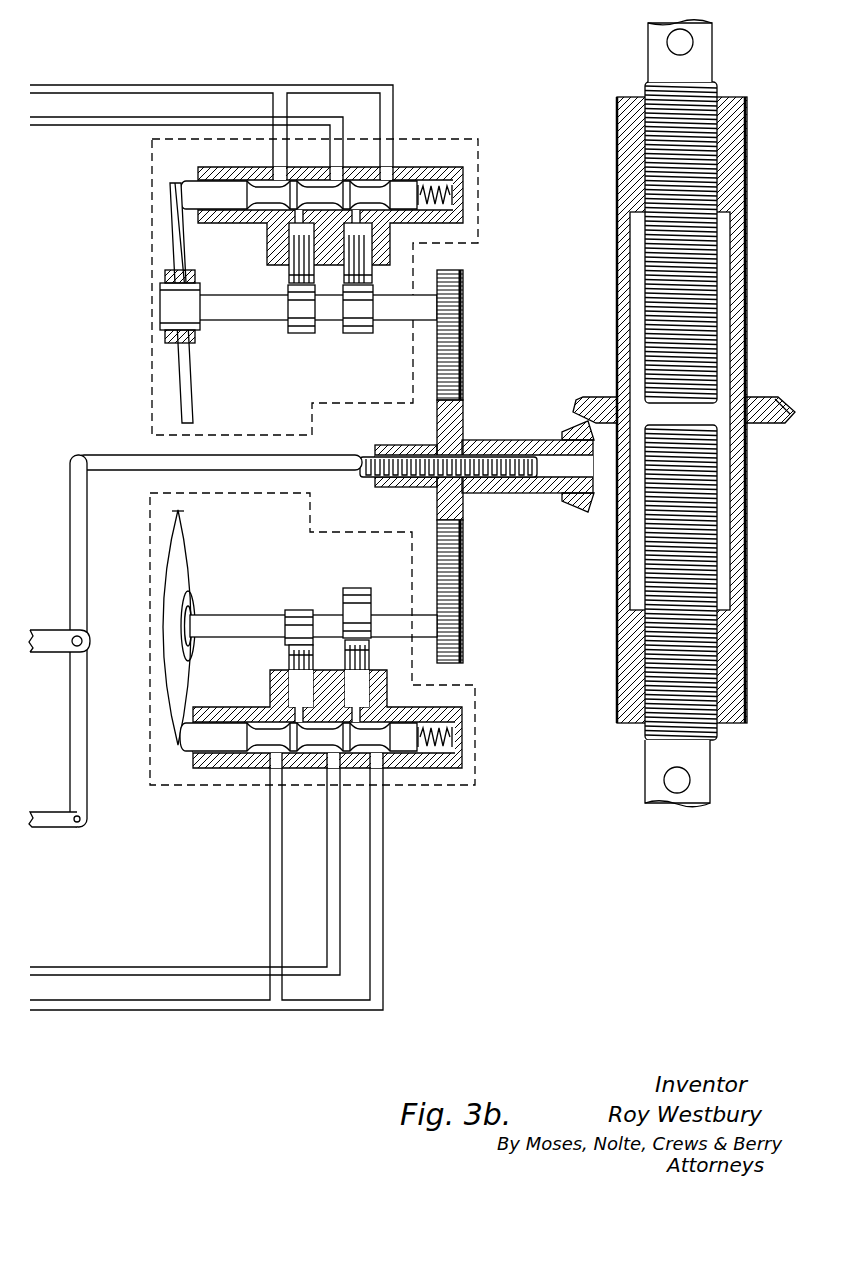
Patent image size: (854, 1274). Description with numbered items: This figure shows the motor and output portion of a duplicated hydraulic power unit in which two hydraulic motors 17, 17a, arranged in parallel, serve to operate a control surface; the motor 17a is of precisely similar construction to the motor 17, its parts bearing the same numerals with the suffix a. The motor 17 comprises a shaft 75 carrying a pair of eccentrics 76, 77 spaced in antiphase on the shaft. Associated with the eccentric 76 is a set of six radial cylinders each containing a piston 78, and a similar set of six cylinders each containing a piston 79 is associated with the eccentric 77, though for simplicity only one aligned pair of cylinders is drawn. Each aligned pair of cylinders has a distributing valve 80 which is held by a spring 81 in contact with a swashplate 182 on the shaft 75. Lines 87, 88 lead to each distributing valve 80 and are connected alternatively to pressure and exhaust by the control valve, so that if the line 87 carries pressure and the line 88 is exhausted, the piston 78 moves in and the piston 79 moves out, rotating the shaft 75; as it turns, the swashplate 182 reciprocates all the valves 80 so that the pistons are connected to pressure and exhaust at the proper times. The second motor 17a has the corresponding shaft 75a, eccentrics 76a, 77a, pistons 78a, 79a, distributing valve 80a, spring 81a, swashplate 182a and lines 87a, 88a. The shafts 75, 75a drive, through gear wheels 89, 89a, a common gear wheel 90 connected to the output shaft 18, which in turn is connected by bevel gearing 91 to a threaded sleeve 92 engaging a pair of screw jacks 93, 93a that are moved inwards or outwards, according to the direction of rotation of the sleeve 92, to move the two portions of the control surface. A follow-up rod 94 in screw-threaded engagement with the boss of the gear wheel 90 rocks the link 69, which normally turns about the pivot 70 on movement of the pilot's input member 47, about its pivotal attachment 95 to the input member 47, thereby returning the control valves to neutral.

The hydraulic motor 17 is at (468, 134).
The hydraulic motor 17a is at (459, 798).
The output shaft 18 is at (479, 440).
The pilot's input member 47 is at (52, 856).
The link 69 is at (88, 697).
The pivot 70 is at (74, 458).
The shaft 75 is at (242, 320).
The shaft 75a is at (240, 614).
The eccentric 76 is at (301, 334).
The eccentric 76a is at (300, 609).
The eccentric 77 is at (360, 334).
The eccentric 77a is at (358, 587).
The piston 78 is at (288, 272).
The piston 78a is at (288, 667).
The piston 79 is at (372, 272).
The piston 79a is at (369, 666).
The distributing valve 80 is at (228, 200).
The distributing valve 80a is at (325, 743).
The spring 81 is at (455, 195).
The spring 81a is at (452, 737).
The line 87 is at (134, 85).
The line 87a is at (243, 1011).
The line 88 is at (97, 126).
The line 88a is at (226, 966).
The gear wheel 89 is at (465, 291).
The gear wheel 89a is at (465, 621).
The common gear wheel 90 is at (465, 393).
The bevel gearing 91 is at (570, 414).
The threaded sleeve 92 is at (748, 352).
The screw jack 93 is at (648, 65).
The screw jack 93a is at (645, 786).
The follow-up rod 94 is at (332, 454).
The pivotal attachment 95 is at (82, 821).
The swashplate 182 is at (190, 379).
The swashplate 182a is at (186, 541).